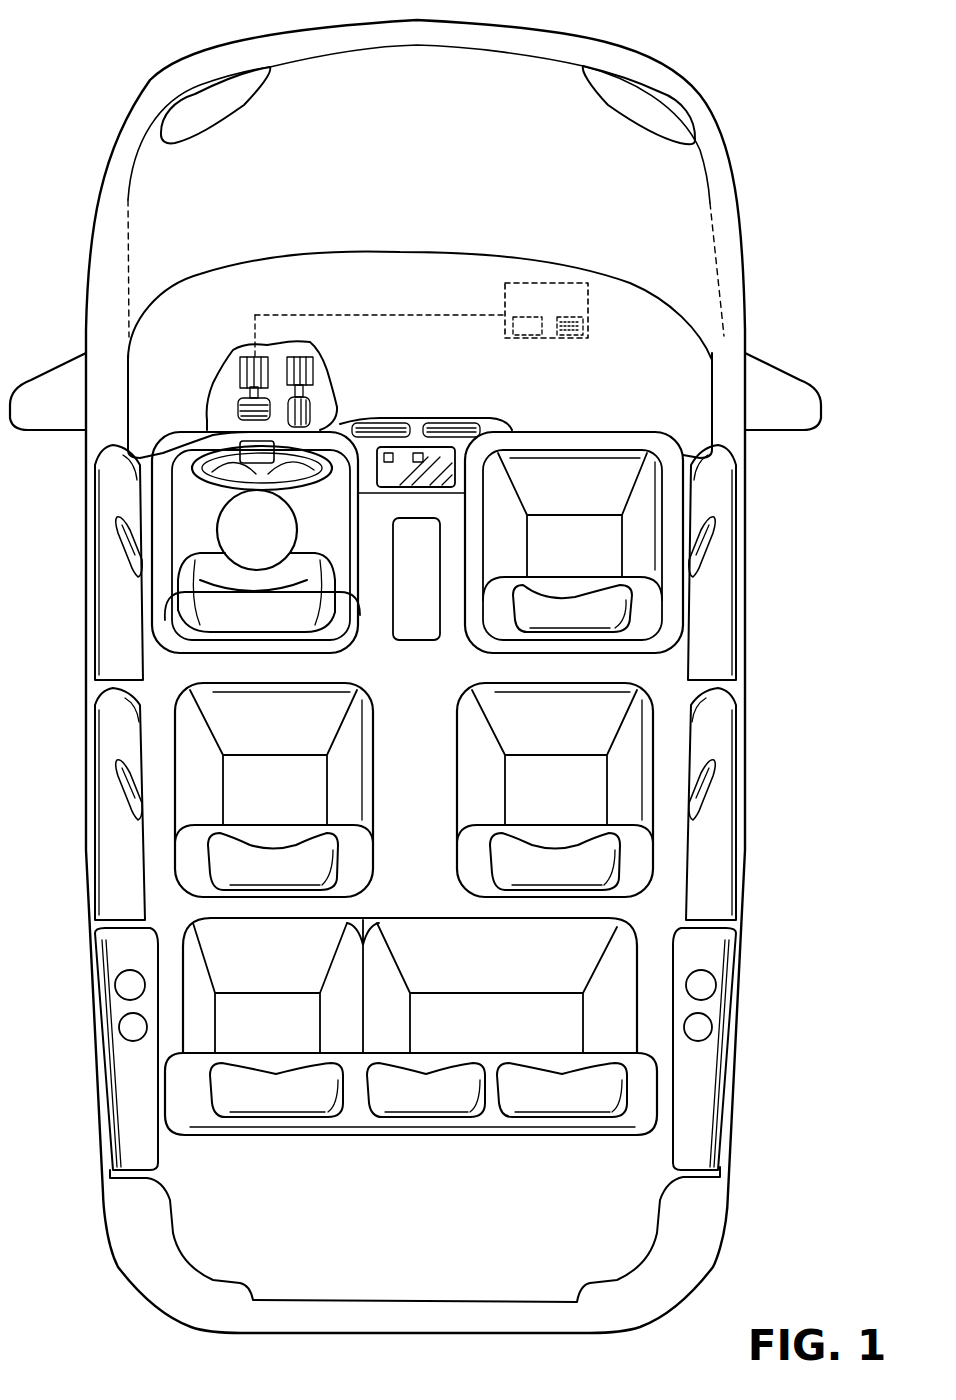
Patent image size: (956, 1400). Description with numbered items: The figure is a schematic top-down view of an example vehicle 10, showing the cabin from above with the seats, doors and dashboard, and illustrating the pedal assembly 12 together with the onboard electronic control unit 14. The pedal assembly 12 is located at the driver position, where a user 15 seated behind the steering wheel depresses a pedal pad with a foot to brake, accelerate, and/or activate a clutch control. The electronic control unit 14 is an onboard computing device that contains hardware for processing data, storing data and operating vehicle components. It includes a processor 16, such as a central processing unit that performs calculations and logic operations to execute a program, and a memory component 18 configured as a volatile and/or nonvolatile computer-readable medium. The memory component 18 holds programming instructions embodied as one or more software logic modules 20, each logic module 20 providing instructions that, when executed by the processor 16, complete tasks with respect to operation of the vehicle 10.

The vehicle 10 is at (101, 50).
The pedal assembly 12 is at (234, 313).
The electronic control unit 14 is at (587, 249).
The user 15 is at (303, 563).
The processor 16 is at (524, 340).
The memory component 18 is at (577, 338).
The logic module 20 is at (441, 329).